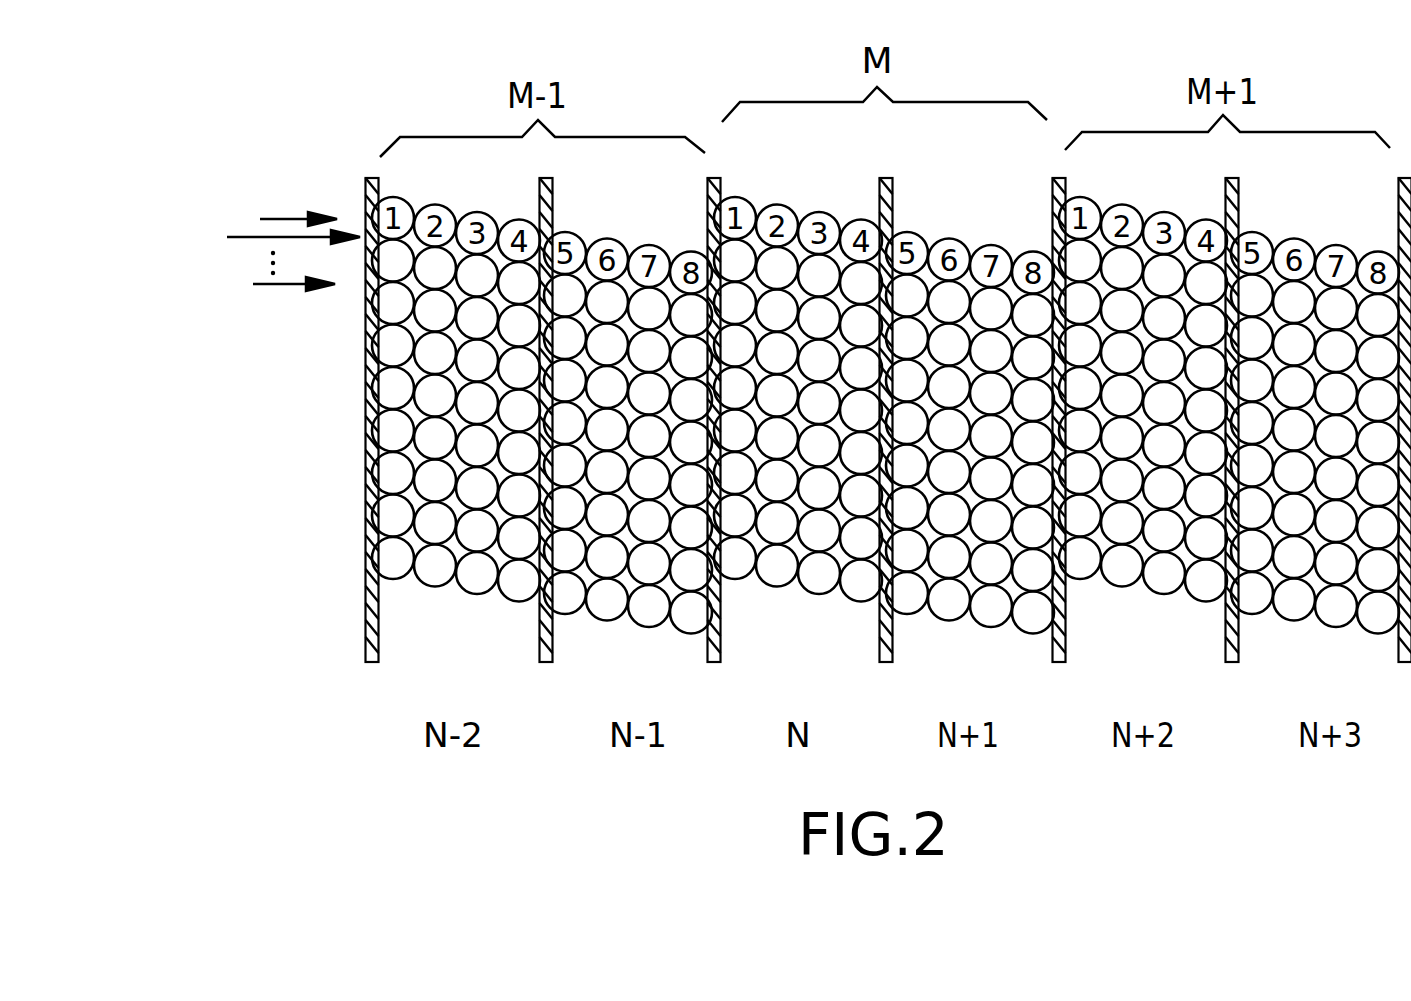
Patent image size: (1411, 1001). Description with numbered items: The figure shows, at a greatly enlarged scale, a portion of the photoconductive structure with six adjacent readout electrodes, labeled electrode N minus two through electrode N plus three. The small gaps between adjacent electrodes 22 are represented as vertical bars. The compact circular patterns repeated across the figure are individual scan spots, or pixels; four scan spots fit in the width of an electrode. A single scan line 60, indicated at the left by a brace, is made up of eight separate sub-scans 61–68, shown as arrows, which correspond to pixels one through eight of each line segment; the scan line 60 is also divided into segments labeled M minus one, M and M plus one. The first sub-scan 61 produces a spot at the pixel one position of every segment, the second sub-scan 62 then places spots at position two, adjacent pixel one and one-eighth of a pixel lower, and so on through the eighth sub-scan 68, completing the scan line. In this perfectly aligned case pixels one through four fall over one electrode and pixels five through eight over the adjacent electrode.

The gaps between adjacent electrodes 22 is at (365, 650).
The scan line 60 is at (225, 257).
The first sub-scan 61 is at (281, 218).
The second sub-scan 62 is at (255, 236).
The eighth sub-scan 68 is at (277, 285).